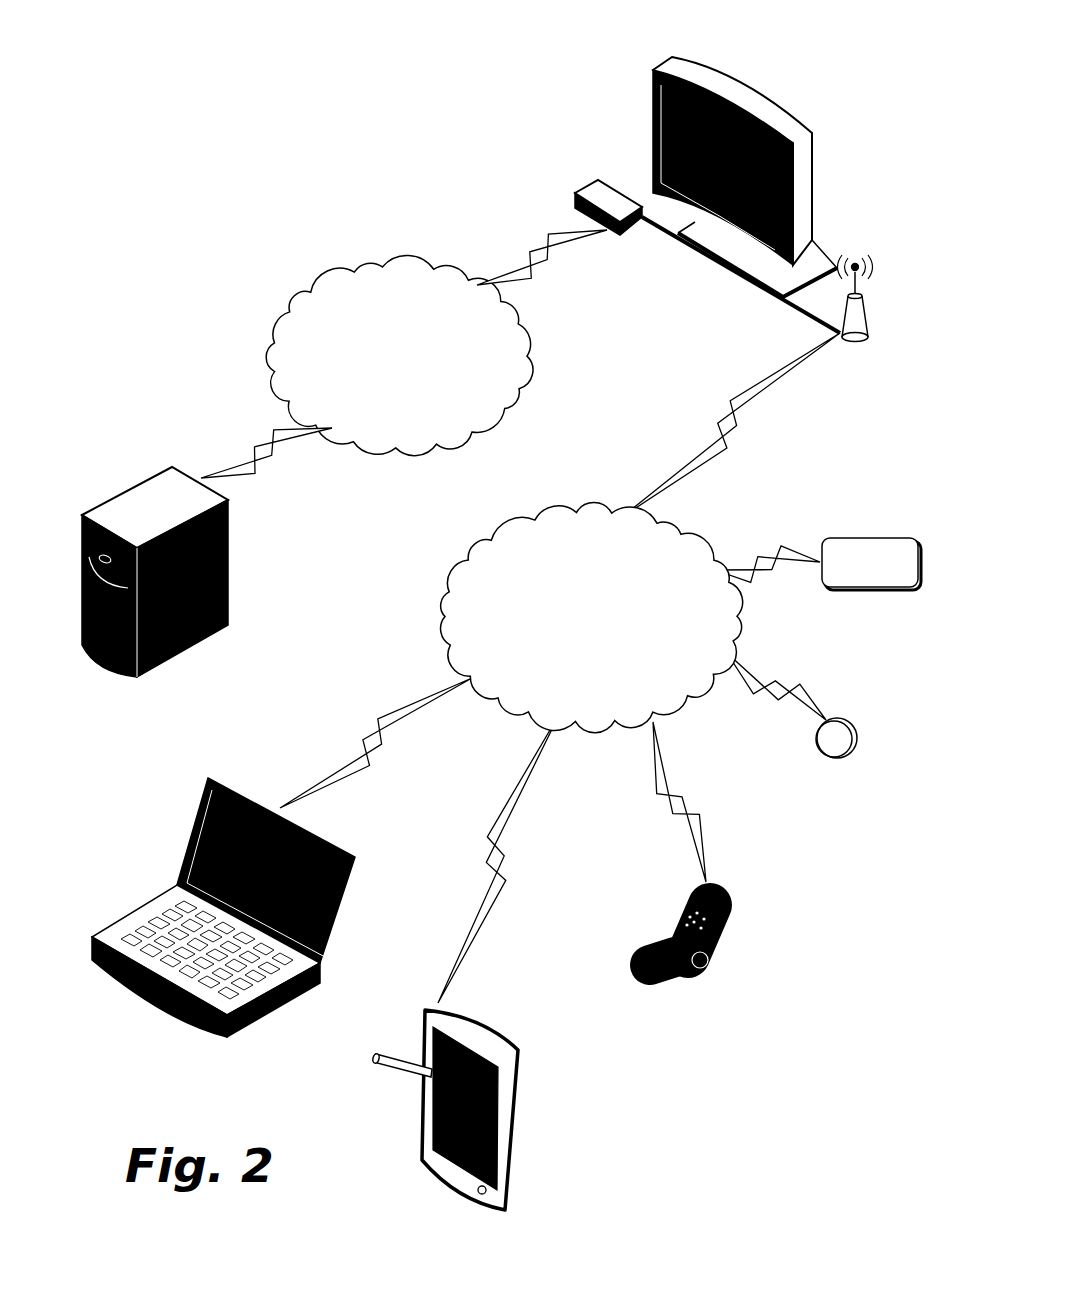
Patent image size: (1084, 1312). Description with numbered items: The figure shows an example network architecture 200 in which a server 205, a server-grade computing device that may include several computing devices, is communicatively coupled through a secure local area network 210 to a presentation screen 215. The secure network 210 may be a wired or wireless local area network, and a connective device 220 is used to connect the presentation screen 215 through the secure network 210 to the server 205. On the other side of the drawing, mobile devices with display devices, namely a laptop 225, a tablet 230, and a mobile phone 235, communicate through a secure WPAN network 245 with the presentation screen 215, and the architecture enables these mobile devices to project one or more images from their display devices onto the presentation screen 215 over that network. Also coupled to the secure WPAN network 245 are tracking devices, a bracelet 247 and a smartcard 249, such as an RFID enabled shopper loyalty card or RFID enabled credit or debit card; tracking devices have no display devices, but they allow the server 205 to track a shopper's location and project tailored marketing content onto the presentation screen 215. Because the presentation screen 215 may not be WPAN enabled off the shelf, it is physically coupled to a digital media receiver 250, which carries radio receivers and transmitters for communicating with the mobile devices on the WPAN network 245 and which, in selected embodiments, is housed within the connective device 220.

The network architecture 200 is at (262, 73).
The server 205 is at (172, 466).
The secure local area network 210 is at (380, 385).
The presentation screen 215 is at (673, 58).
The connective device 220 is at (599, 180).
The laptop 225 is at (212, 778).
The tablet 230 is at (513, 1048).
The mobile phone 235 is at (639, 949).
The secure WPAN network 245 is at (572, 644).
The bracelet 247 is at (836, 758).
The smartcard 249 is at (853, 573).
The digital media receiver 250 is at (869, 341).